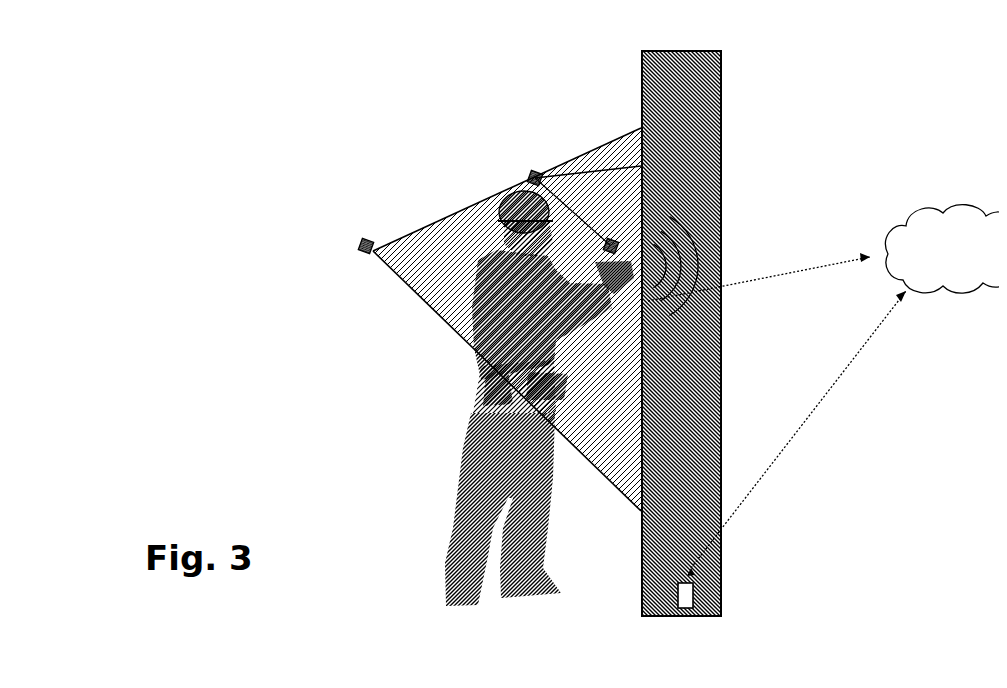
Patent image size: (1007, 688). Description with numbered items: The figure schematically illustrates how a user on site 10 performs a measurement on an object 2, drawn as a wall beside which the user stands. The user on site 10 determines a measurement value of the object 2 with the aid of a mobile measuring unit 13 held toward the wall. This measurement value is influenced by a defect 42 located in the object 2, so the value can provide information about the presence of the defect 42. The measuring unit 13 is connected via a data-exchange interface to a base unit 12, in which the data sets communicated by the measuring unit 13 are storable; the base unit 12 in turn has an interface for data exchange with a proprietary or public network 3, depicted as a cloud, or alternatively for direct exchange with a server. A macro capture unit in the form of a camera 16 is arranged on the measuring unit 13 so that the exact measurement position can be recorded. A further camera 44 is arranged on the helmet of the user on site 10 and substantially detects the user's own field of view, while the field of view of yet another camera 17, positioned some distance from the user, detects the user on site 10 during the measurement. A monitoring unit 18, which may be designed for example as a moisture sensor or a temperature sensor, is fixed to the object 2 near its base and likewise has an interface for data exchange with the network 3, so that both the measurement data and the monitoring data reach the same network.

The object 2 is at (690, 72).
The network 3 is at (948, 258).
The user on site 10 is at (460, 462).
The base unit 12 is at (598, 290).
The mobile measuring unit 13 is at (611, 140).
The camera 16 is at (546, 157).
The further camera 17 is at (342, 230).
The monitoring unit 18 is at (713, 597).
The defect 42 is at (612, 236).
The further camera 44 is at (518, 170).